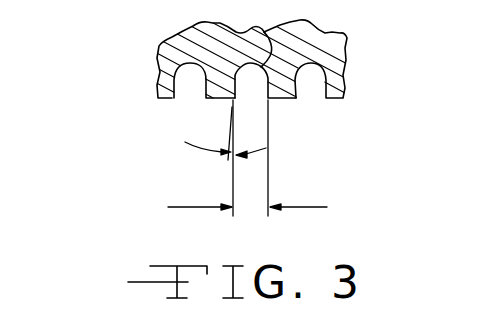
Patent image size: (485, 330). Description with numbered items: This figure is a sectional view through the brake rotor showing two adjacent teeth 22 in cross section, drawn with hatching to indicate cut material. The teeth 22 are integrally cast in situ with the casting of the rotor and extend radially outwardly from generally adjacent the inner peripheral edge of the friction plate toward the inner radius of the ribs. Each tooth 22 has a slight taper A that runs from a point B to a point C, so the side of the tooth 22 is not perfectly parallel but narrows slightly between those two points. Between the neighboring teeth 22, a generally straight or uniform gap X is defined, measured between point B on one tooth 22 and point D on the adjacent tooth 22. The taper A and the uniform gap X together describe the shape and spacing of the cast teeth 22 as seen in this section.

The teeth 22 is at (205, 99).
The taper A is at (229, 160).
The point B is at (236, 101).
The point C is at (268, 31).
The point D is at (270, 102).
The gap X is at (249, 210).